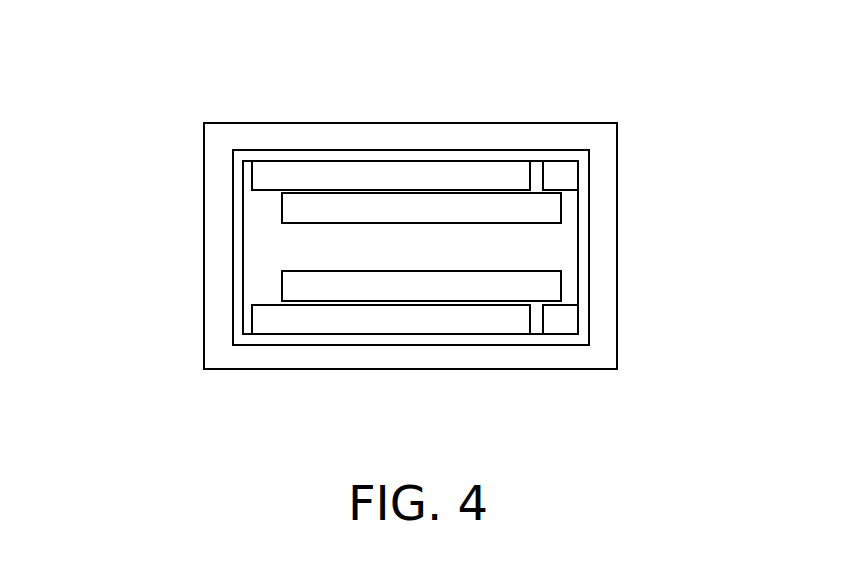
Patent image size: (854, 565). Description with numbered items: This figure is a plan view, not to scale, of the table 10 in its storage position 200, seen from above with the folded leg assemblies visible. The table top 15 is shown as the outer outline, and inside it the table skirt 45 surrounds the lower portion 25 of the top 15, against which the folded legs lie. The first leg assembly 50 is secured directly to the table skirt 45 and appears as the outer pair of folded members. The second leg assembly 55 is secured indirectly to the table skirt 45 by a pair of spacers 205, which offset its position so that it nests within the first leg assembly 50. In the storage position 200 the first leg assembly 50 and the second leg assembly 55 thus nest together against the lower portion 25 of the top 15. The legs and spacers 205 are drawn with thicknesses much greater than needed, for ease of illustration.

The table 10 is at (110, 203).
The top 15 is at (412, 123).
The lower portion 25 is at (464, 262).
The table skirt 45 is at (237, 296).
The first leg assembly 50 is at (302, 174).
The second leg assembly 55 is at (352, 213).
The storage position 200 is at (680, 216).
The spacers 205 is at (563, 174).